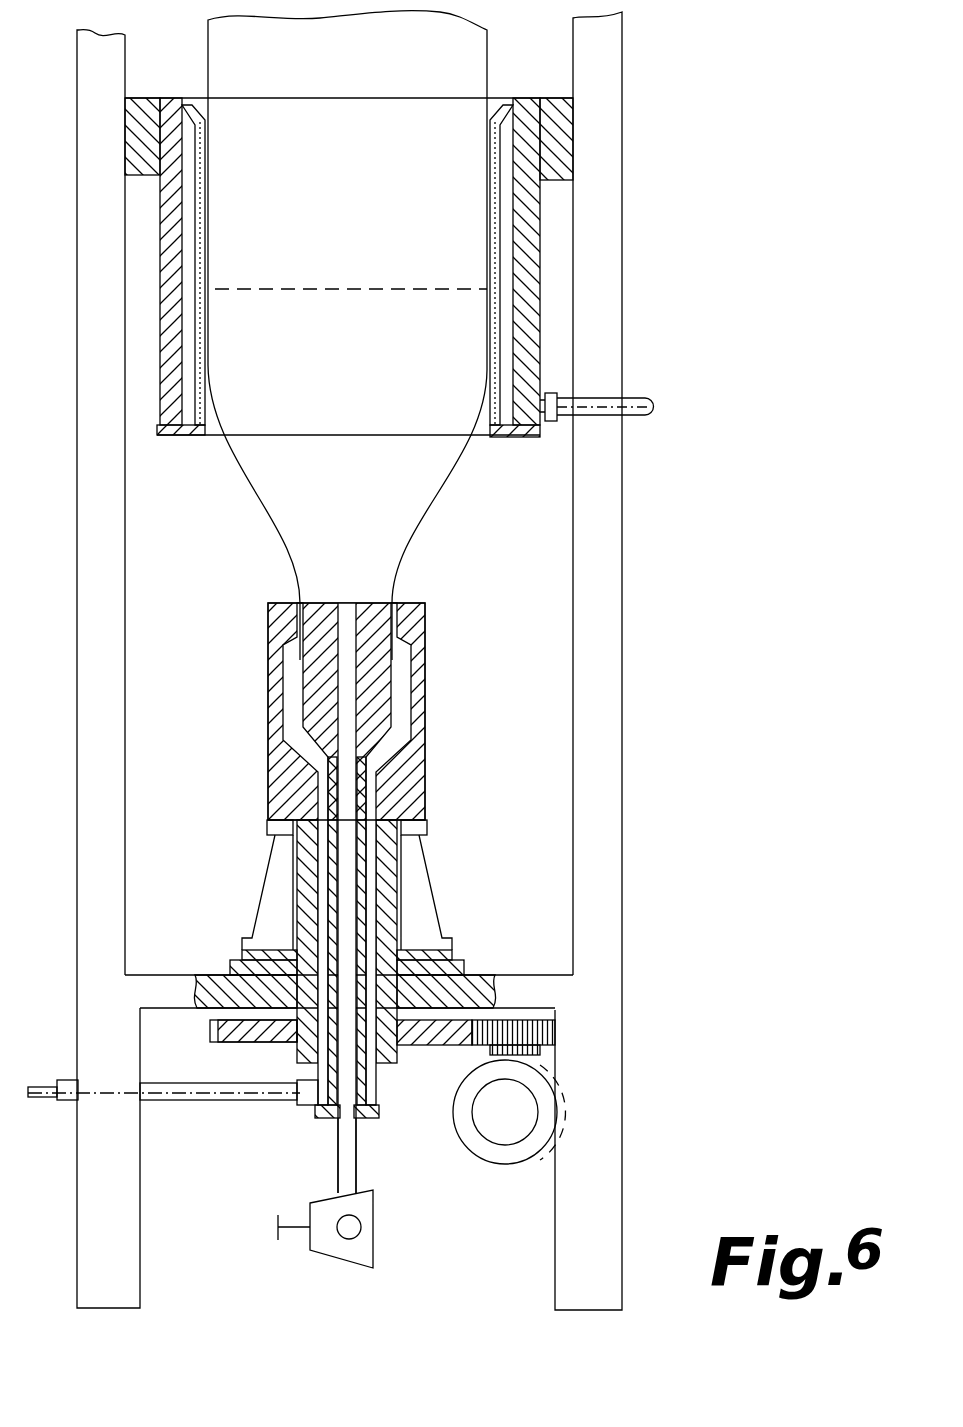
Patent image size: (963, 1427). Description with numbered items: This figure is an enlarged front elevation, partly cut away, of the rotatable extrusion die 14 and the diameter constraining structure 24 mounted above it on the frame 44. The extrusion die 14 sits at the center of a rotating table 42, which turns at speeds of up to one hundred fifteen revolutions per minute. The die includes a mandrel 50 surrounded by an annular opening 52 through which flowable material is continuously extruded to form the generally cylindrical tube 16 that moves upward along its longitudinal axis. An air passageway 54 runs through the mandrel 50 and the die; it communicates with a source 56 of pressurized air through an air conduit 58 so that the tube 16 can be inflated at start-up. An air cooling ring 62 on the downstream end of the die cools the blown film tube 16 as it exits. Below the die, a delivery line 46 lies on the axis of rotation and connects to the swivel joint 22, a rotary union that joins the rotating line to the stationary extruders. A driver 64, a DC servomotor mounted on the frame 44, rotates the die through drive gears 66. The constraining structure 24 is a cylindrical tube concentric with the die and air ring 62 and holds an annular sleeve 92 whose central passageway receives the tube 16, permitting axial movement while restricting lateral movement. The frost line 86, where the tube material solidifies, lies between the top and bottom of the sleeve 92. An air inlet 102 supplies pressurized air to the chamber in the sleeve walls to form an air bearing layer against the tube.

The extrusion die 14 is at (380, 898).
The tube 16 is at (490, 55).
The swivel joint 22 is at (297, 1053).
The diameter constraining structure 24 is at (528, 302).
The rotating table 42 is at (415, 830).
The frame 44 is at (612, 805).
The delivery line 46 is at (176, 1103).
The mandrel 50 is at (373, 620).
The annular opening 52 is at (300, 597).
The air passageway 54 is at (345, 697).
The source of pressurized air 56 is at (357, 1255).
The air conduit 58 is at (350, 1162).
The air cooling ring 62 is at (415, 617).
The driver 64 is at (500, 1160).
The drive gears 66 is at (548, 1035).
The frost line 86 is at (284, 290).
The annular sleeve 92 is at (497, 222).
The air inlet 102 is at (640, 412).